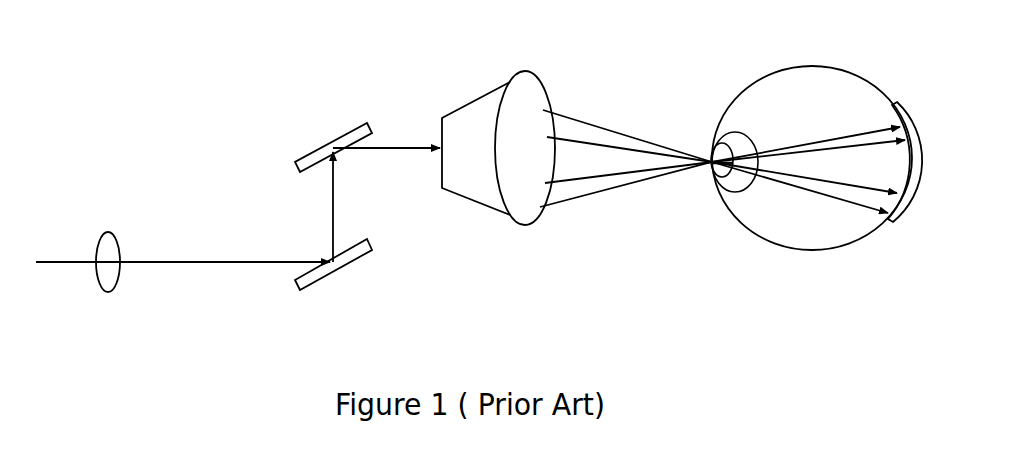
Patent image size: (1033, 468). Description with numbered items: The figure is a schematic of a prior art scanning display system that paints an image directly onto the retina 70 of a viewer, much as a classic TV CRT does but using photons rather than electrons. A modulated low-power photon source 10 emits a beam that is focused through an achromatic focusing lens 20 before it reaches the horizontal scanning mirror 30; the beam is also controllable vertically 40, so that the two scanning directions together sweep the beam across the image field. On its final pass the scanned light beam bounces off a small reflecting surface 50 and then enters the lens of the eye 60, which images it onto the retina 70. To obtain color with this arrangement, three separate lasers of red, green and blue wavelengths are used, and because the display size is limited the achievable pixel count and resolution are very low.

The modulated low-power photon source 10 is at (66, 254).
The achromatic focusing lens 20 is at (357, 262).
The horizontal scanning mirror 30 is at (313, 150).
The vertical scanning control 40 is at (119, 248).
The small reflecting surface 50 is at (465, 103).
The eye 60 is at (718, 141).
The retina 70 is at (886, 219).